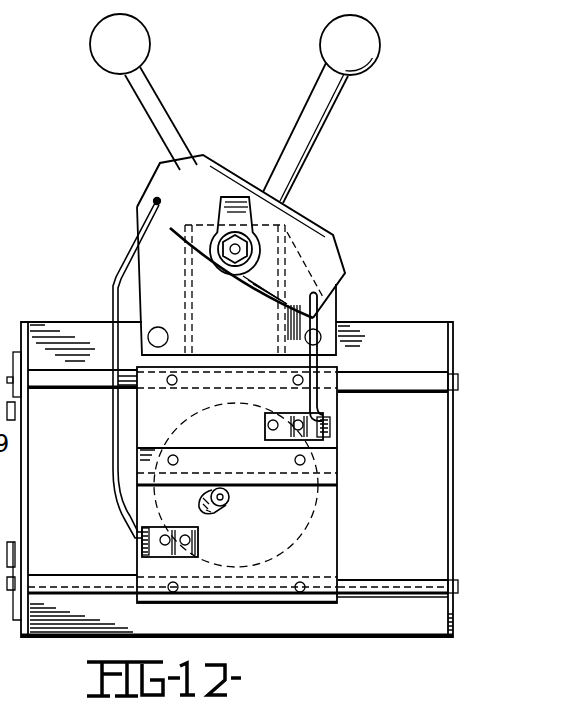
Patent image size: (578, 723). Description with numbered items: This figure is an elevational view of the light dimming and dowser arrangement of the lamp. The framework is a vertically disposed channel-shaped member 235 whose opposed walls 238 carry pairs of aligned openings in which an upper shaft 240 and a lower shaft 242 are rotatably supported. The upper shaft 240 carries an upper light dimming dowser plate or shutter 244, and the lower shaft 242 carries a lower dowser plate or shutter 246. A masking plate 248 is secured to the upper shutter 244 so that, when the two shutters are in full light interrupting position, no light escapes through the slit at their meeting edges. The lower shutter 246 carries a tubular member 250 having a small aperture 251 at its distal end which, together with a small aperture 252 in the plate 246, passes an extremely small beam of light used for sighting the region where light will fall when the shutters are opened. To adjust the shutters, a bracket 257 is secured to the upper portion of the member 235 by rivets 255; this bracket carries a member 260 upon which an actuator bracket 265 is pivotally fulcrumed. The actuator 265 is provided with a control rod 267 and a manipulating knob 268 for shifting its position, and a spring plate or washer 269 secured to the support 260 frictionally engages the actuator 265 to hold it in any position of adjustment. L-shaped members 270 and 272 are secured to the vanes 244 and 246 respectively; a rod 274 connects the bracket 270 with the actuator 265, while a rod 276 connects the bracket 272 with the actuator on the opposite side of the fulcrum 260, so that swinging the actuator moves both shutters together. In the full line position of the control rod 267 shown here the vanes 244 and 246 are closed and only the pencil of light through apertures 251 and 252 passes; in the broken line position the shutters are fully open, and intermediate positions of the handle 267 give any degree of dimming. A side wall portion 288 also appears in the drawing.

The channel-shaped member 235 is at (398, 325).
The opposed walls 238 is at (25, 440).
The upper shaft 240 is at (370, 375).
The lower shaft 242 is at (368, 583).
The upper dowser plate or shutter 244 is at (333, 433).
The lower dowser plate or shutter 246 is at (332, 520).
The masking plate 248 is at (328, 462).
The tubular member 250 is at (212, 508).
The aperture 251 is at (229, 497).
The aperture 252 is at (234, 522).
The rivets 255 is at (150, 333).
The bracket 257 is at (240, 318).
The support member 260 is at (247, 248).
The actuator bracket 265 is at (341, 235).
The control rod 267 is at (325, 100).
The manipulating knob 268 is at (376, 40).
The spring plate or washer 269 is at (247, 210).
The L-shaped member 270 is at (265, 427).
The L-shaped member 272 is at (162, 552).
The rod 274 is at (318, 300).
The rod 276 is at (115, 472).
The right side wall 288 is at (452, 427).